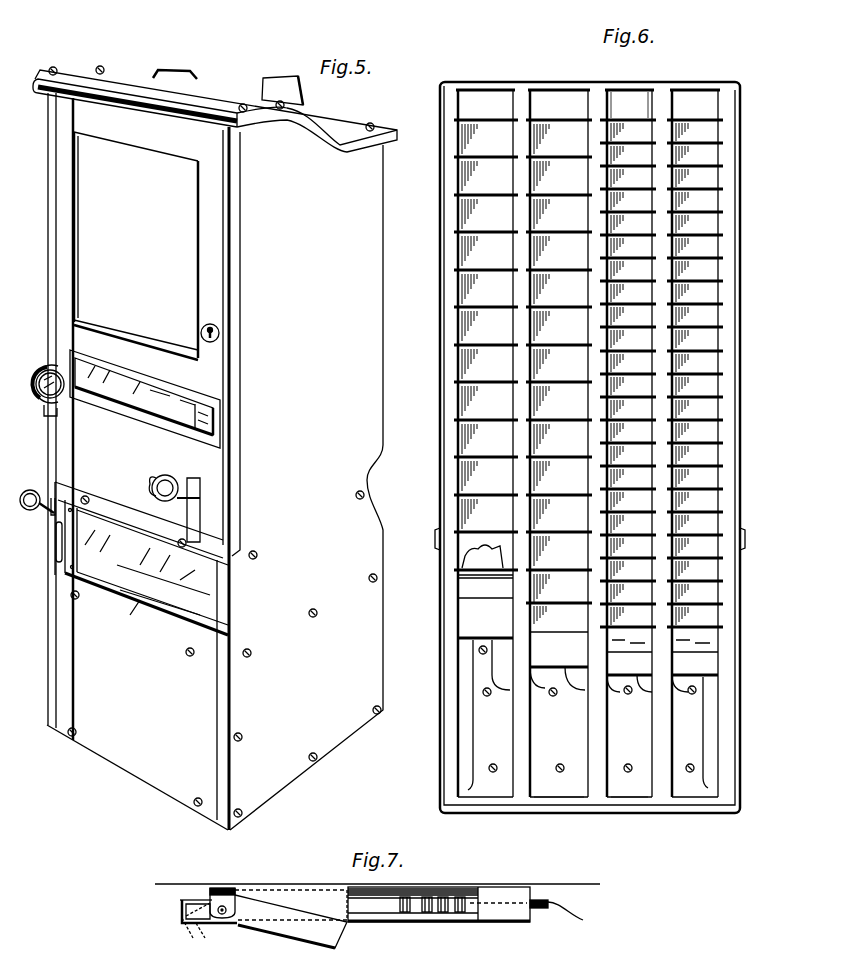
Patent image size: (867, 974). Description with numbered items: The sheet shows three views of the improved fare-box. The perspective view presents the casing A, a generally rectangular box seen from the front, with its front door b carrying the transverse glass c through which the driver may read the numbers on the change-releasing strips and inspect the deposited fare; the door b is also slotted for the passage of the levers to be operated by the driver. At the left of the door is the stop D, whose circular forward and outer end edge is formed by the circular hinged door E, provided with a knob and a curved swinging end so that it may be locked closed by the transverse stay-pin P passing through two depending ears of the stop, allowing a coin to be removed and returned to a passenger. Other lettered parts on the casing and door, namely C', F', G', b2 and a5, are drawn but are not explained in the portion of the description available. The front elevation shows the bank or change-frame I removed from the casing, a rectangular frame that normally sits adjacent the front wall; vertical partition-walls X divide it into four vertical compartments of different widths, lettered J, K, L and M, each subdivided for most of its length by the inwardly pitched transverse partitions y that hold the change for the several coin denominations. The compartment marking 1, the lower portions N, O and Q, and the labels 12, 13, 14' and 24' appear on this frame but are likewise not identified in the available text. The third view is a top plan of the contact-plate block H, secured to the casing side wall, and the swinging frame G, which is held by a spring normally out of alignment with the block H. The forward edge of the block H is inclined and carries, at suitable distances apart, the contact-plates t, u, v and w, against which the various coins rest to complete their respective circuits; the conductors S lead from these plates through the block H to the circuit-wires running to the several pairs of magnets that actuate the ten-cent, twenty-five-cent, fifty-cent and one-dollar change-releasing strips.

In FIG. 5, the casing A is at (215, 448).
In FIG. 5, the hinged flap on top C' is at (304, 90).
In FIG. 5, the front door b is at (235, 297).
In FIG. 5, the stop D is at (43, 365).
In FIG. 5, the circular hinged door E is at (42, 408).
In FIG. 5, the stay-pin P is at (57, 416).
In FIG. 6, the stay-pin P is at (635, 667).
In FIG. 5, the transverse glass c is at (160, 412).
In FIG. 5, the glass / pivot F' is at (234, 416).
In FIG. 7, the glass / pivot F' is at (263, 922).
In FIG. 5, the operating knob G' is at (174, 508).
In FIG. 5, the ring pull b2 is at (36, 514).
In FIG. 5, the slot bar a5 is at (58, 562).
In FIG. 6, the bank or change-frame I is at (727, 548).
In FIG. 6, the first column J is at (500, 90).
In FIG. 6, the second column K is at (573, 100).
In FIG. 6, the third column L is at (643, 100).
In FIG. 6, the fourth column M is at (698, 100).
In FIG. 6, the top compartment 1 is at (654, 107).
In FIG. 6, the subdividing transverse partitions y is at (750, 497).
In FIG. 6, the lower box of column J N is at (470, 617).
In FIG. 6, the ticket 12 is at (482, 557).
In FIG. 6, the ticket compartment 13 is at (485, 591).
In FIG. 6, the delivery compartment 14' is at (523, 639).
In FIG. 6, the delivery compartment 24' is at (662, 663).
In FIG. 6, the hook O is at (575, 655).
In FIG. 6, the vertical partition-walls X is at (655, 733).
In FIG. 6, the bottom part of column M Q is at (707, 667).
In FIG. 7, the swinging frame G is at (291, 932).
In FIG. 7, the contact-plate block H is at (495, 915).
In FIG. 7, the contact-plate w is at (404, 913).
In FIG. 7, the contact-plate v is at (426, 913).
In FIG. 7, the contact-plate u is at (443, 913).
In FIG. 7, the contact-plate t is at (460, 913).
In FIG. 7, the conductors S is at (556, 918).